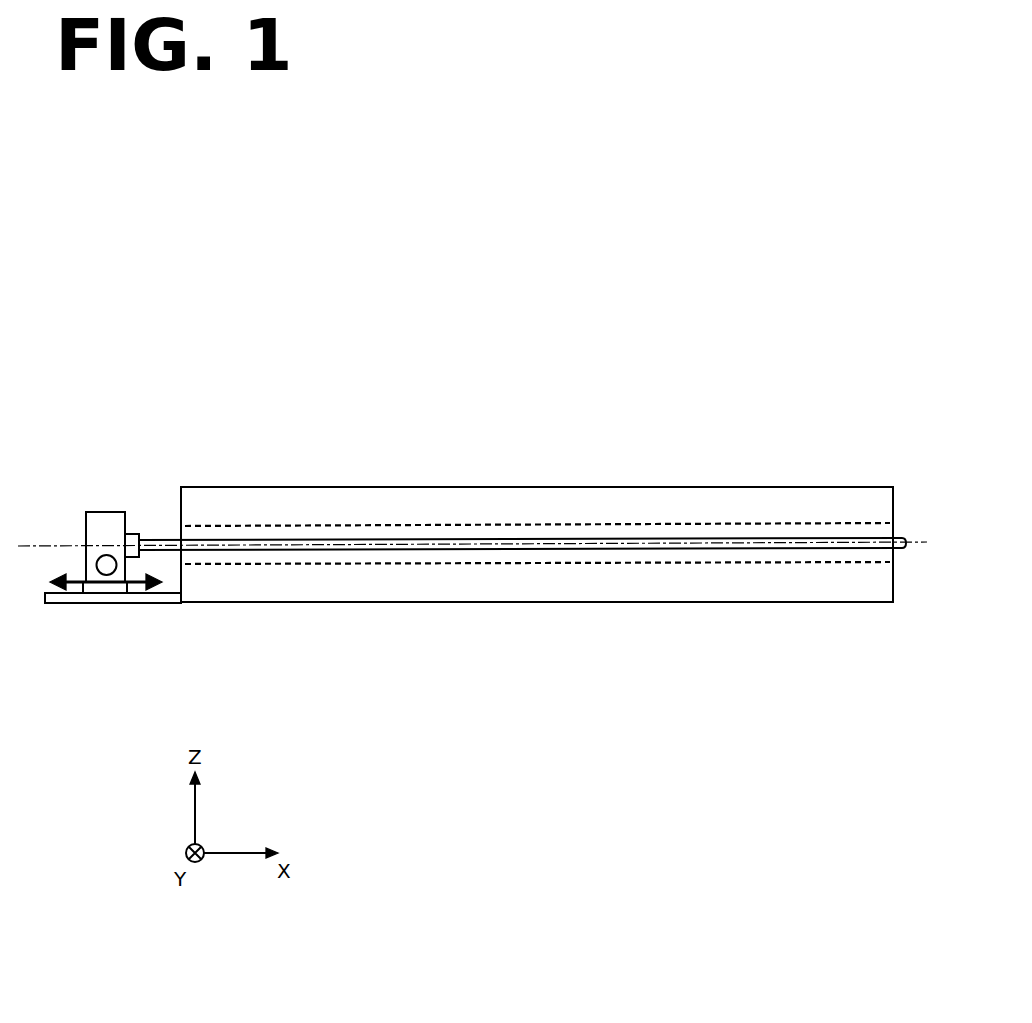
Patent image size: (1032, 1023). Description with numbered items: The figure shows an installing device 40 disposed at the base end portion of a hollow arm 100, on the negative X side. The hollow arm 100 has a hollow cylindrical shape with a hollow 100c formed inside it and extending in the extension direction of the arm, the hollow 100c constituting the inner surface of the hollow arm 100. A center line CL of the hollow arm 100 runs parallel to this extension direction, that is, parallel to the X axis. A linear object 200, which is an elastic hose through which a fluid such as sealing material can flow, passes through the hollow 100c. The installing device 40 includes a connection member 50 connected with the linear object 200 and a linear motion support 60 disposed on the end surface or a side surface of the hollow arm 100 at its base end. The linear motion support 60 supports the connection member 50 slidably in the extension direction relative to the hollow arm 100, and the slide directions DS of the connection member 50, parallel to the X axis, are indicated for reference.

The installing device 40 is at (150, 482).
The connection member 50 is at (107, 525).
The linear motion support 60 is at (103, 602).
The slide directions DS is at (82, 585).
The center line CL is at (50, 543).
The hollow arm 100 is at (518, 507).
The hollow 100c is at (372, 525).
The linear object 200 is at (522, 553).